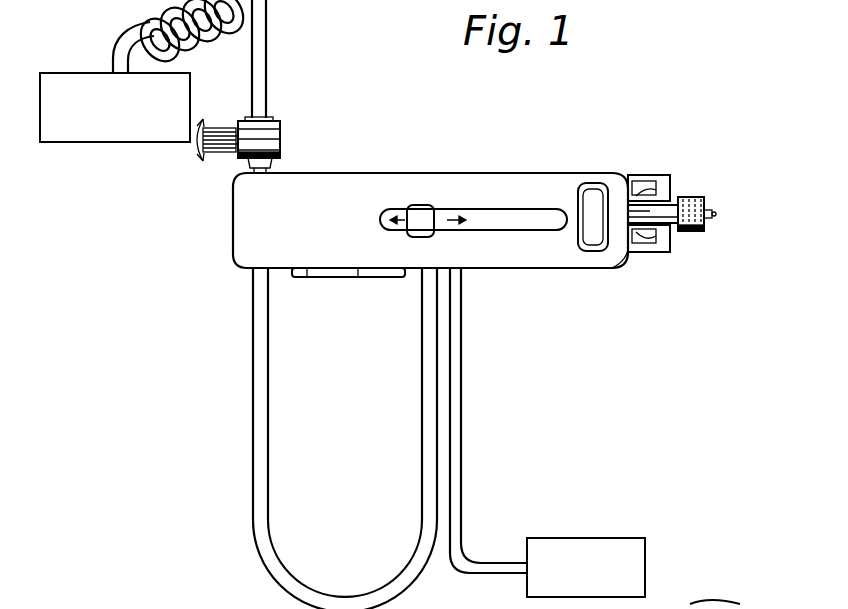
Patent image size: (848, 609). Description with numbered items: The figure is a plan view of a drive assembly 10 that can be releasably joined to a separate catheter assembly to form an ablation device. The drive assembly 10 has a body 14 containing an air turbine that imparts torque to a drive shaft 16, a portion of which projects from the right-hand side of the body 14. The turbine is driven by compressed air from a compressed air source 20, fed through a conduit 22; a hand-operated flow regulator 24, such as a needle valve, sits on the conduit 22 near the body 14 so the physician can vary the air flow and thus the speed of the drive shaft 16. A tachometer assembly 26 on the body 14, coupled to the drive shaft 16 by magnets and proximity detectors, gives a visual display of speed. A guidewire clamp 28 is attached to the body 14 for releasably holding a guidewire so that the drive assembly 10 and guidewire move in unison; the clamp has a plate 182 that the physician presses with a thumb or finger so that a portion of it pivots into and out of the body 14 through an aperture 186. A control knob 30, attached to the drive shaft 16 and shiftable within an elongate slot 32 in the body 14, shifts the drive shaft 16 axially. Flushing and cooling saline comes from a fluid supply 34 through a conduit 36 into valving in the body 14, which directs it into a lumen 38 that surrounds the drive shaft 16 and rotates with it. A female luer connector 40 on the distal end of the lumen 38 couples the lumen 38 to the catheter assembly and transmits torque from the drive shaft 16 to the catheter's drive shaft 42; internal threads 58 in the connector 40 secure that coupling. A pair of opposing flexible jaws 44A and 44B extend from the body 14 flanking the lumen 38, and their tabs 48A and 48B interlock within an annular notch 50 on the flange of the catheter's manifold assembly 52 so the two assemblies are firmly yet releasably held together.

The drive assembly 10 is at (604, 86).
The body 14 is at (556, 173).
The drive shaft 16 is at (712, 213).
The compressed air source 20 is at (67, 73).
The conduit 22 is at (266, 48).
The flow regulator 24 is at (282, 136).
The tachometer assembly 26 is at (600, 183).
The guidewire clamp 28 is at (354, 277).
The control knob 30 is at (420, 206).
The elongate slot 32 is at (493, 209).
The fluid supply 34 is at (604, 538).
The conduit 36 is at (461, 412).
The lumen 38 is at (622, 262).
The connector 40 is at (678, 230).
The drive shaft 42 is at (695, 603).
The flexible jaw 44A is at (639, 183).
The flexible jaw 44B is at (670, 246).
The tab 48A is at (656, 191).
The tab 48B is at (652, 254).
The annular notch 50 is at (334, 438).
The manifold assembly 52 is at (444, 438).
The internal threads 58 is at (690, 198).
The plate 182 is at (390, 278).
The aperture 186 is at (306, 279).